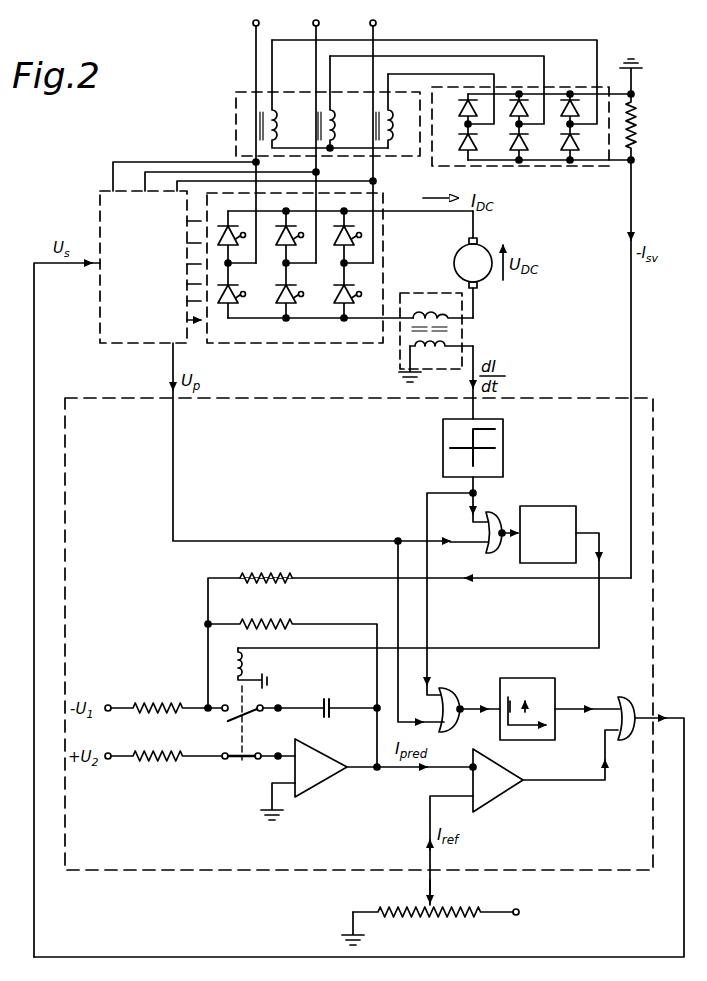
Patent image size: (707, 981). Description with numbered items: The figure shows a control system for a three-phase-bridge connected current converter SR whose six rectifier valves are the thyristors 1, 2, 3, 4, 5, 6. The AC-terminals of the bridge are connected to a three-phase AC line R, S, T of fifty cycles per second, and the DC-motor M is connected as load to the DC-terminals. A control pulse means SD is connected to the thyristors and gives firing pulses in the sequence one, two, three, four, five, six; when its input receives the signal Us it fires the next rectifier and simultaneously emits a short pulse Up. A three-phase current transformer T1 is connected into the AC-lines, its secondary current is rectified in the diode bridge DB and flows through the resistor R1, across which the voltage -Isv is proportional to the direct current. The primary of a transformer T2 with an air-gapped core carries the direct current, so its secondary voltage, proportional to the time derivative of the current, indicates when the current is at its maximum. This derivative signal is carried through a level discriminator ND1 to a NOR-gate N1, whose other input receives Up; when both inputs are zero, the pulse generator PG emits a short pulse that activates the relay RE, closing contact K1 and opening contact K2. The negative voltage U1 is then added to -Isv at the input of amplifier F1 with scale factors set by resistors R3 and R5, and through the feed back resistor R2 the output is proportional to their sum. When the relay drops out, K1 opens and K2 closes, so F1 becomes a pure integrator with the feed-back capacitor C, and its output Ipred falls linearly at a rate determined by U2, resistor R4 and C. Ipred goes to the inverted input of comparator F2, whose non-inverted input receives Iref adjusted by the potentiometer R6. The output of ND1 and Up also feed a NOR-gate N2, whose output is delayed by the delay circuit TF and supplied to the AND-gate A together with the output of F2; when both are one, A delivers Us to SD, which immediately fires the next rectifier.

The three-phase AC line phase R is at (263, 139).
The three-phase AC line phase S is at (323, 139).
The three-phase AC line phase T is at (380, 139).
The three-phase current transformer T1 is at (412, 153).
The diode bridge DB is at (533, 126).
The resistor R1 is at (639, 109).
The control pulse means SD is at (130, 341).
The current converter SR is at (236, 341).
The thyristor 1 is at (232, 238).
The thyristor 2 is at (350, 291).
The thyristor 3 is at (290, 238).
The thyristor 4 is at (234, 291).
The thyristor 5 is at (348, 238).
The thyristor 6 is at (292, 291).
The DC-motor M is at (473, 264).
The transformer T2 is at (455, 368).
The level discriminator ND1 is at (468, 442).
The NOR-gate N1 is at (502, 541).
The pulse generator PG is at (548, 534).
The NOR-gate N2 is at (469, 702).
The delay circuit TF is at (547, 696).
The AND-gate A is at (626, 709).
The amplifier F1 is at (318, 776).
The comparator F2 is at (497, 790).
The feed back resistor R2 is at (291, 682).
The resistor R3 is at (266, 567).
The resistor R4 is at (166, 770).
The resistor R5 is at (166, 697).
The potentiometer R6 is at (446, 920).
The relay RE is at (252, 668).
The contact K1 is at (222, 723).
The contact K2 is at (237, 771).
The feed-back capacitor C is at (328, 698).